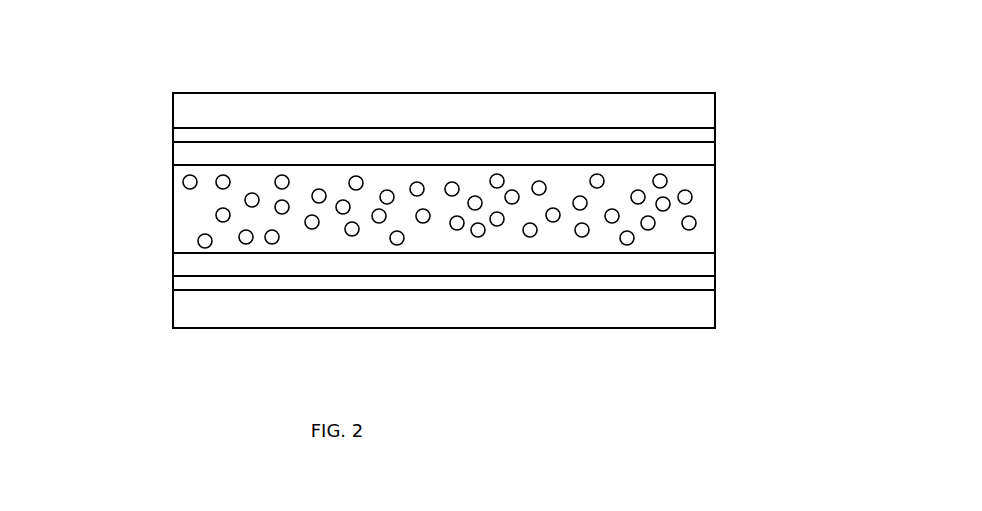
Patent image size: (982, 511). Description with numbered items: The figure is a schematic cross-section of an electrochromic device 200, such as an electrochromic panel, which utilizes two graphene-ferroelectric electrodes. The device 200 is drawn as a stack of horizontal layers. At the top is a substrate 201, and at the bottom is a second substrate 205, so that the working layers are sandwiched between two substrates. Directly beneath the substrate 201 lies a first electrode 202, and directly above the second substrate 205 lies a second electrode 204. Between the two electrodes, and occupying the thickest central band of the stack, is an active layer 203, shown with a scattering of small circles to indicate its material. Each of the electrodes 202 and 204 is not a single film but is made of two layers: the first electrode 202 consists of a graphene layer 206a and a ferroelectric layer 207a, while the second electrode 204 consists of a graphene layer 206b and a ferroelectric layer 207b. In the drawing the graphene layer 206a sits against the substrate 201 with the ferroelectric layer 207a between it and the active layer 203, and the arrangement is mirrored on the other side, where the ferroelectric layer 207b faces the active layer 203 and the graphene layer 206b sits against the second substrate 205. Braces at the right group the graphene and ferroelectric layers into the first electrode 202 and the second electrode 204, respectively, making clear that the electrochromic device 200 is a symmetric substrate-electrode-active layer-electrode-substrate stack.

The electrochromic device 200 is at (551, 63).
The substrate 201 is at (171, 105).
The first electrode 202 is at (737, 169).
The active layer 203 is at (171, 208).
The second electrode 204 is at (737, 253).
The second substrate 205 is at (171, 313).
The graphene layer 206a is at (171, 135).
The graphene layer 206b is at (171, 282).
The ferroelectric layer 207a is at (171, 159).
The ferroelectric layer 207b is at (171, 261).